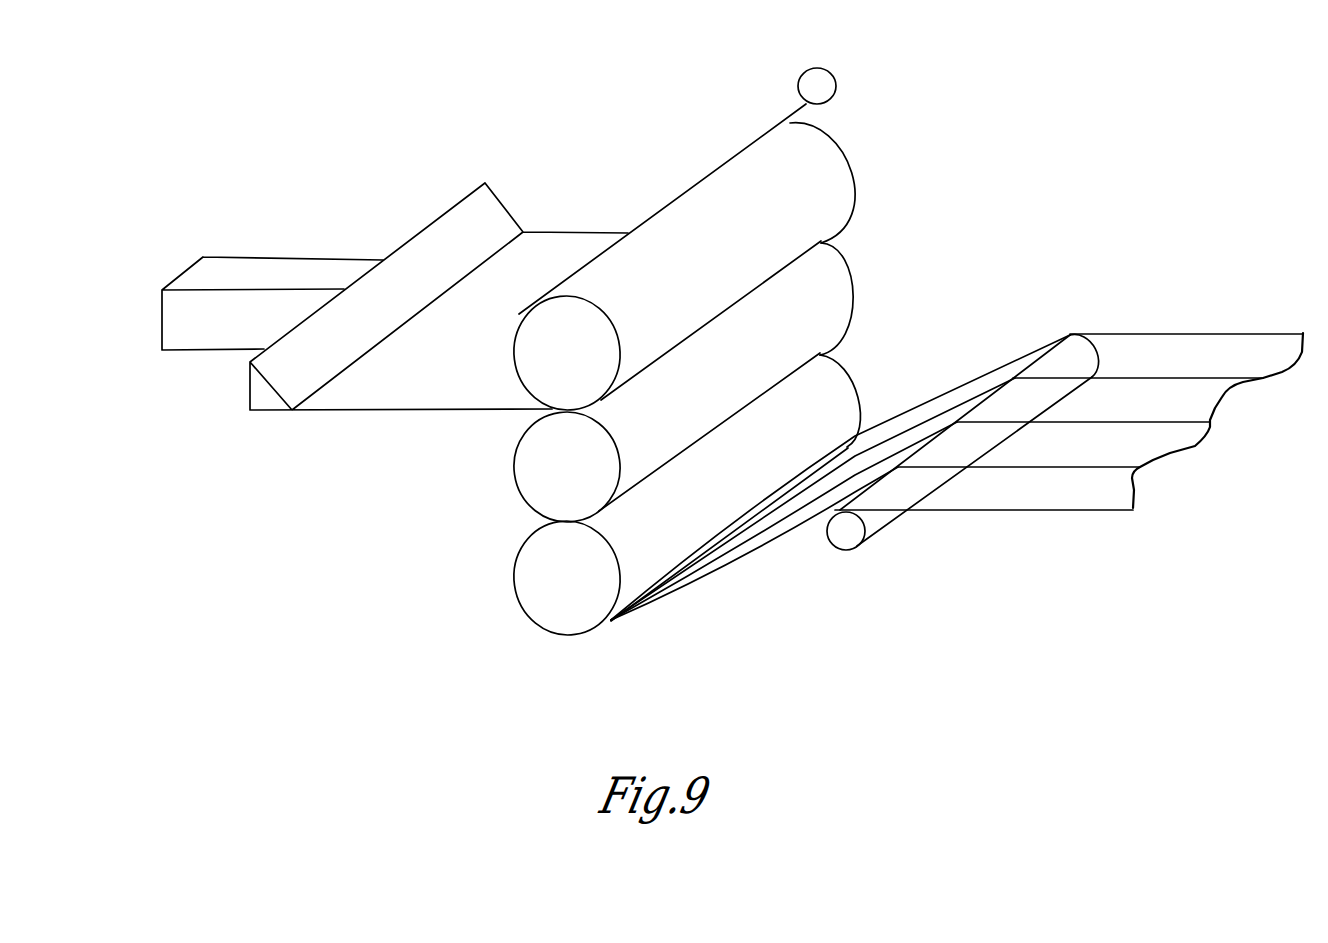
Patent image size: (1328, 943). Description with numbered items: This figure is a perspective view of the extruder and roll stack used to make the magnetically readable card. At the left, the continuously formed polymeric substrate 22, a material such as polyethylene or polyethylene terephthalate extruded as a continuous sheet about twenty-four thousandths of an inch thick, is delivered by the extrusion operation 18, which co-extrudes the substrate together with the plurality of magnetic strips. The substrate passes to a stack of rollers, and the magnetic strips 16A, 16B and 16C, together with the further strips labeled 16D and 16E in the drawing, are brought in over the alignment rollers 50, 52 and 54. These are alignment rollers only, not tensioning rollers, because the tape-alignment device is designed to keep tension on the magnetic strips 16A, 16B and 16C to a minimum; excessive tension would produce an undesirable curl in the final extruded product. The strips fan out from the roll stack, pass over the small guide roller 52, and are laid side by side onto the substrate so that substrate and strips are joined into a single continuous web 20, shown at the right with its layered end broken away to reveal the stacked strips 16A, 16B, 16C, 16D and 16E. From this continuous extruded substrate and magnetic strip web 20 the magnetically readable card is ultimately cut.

The magnetic strip 16A is at (803, 110).
The magnetic strip 16B is at (1143, 378).
The magnetic strip 16C is at (1087, 422).
The fourth strip layer 16D is at (1022, 465).
The fifth strip layer 16E is at (987, 508).
The extrusion operation 18 is at (248, 265).
The continuous web 20 is at (1037, 500).
The polymeric substrate 22 is at (548, 244).
The alignment roller 50 is at (523, 608).
The alignment roller 52 is at (840, 543).
The alignment roller 54 is at (523, 497).